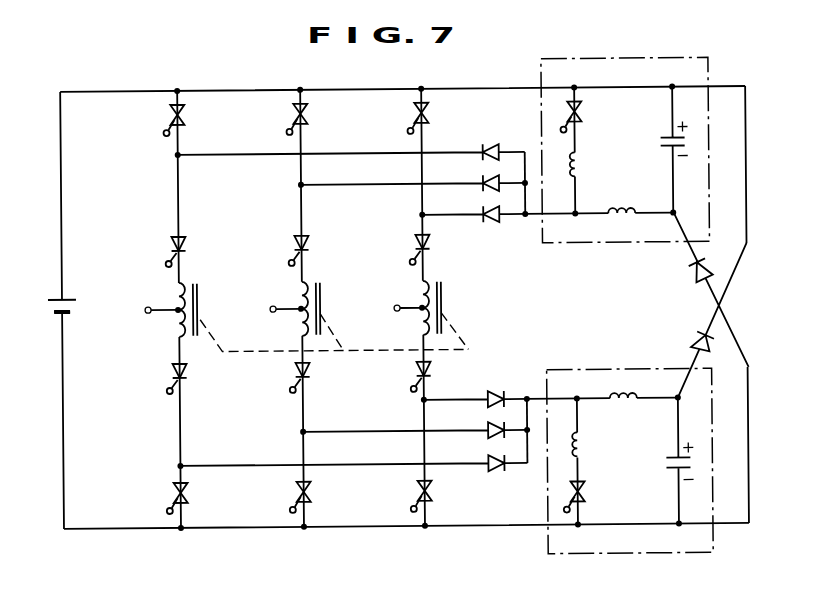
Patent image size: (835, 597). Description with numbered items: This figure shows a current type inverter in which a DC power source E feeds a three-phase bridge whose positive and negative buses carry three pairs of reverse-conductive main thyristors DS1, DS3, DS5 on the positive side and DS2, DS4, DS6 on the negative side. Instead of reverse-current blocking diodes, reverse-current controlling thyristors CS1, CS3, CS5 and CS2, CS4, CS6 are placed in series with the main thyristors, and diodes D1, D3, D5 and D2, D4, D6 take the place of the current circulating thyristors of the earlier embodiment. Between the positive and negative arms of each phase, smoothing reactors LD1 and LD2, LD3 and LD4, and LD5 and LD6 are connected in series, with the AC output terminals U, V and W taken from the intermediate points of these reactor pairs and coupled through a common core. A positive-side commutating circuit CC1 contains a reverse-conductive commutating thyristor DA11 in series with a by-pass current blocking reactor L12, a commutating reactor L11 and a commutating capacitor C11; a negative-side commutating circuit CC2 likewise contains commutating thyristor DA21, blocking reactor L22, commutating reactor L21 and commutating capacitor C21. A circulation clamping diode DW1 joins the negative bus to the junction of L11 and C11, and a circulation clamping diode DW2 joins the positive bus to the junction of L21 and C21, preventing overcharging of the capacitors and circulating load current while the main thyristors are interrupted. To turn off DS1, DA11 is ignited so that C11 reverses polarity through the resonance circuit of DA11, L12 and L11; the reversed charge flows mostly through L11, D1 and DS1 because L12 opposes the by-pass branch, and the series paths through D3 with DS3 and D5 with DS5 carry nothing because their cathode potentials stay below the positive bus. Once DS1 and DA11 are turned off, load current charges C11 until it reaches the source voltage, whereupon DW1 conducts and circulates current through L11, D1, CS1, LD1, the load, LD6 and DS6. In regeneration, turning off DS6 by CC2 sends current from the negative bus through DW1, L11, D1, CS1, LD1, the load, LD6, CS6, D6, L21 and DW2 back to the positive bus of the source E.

The DC power source E is at (94, 290).
The main thyristor DS1 is at (171, 111).
The main thyristor DS2 is at (171, 489).
The main thyristor DS3 is at (294, 111).
The main thyristor DS4 is at (294, 491).
The main thyristor DS5 is at (414, 111).
The main thyristor DS6 is at (416, 491).
The thyristor CS1 is at (188, 241).
The thyristor CS2 is at (172, 370).
The thyristor CS3 is at (311, 244).
The thyristor CS4 is at (292, 370).
The thyristor CS5 is at (432, 243).
The thyristor CS6 is at (412, 370).
The smoothing reactor LD1 is at (173, 290).
The smoothing reactor LD2 is at (175, 323).
The smoothing reactor LD3 is at (298, 292).
The smoothing reactor LD4 is at (297, 324).
The smoothing reactor LD5 is at (420, 293).
The smoothing reactor LD6 is at (418, 324).
The AC output terminal U is at (153, 310).
The AC output terminal V is at (276, 309).
The AC output terminal W is at (398, 309).
The diode D1 is at (490, 143).
The diode D2 is at (492, 458).
The diode D3 is at (493, 176).
The diode D4 is at (492, 426).
The diode D5 is at (493, 208).
The diode D6 is at (492, 393).
The commutating circuit CC1 is at (682, 60).
The commutating circuit CC2 is at (601, 40).
The commutating thyristor DA11 is at (586, 111).
The commutating thyristor DA21 is at (589, 495).
The commutating capacitor C11 is at (663, 143).
The commutating capacitor C21 is at (666, 462).
The commutating reactor L11 is at (609, 212).
The by-pass current blocking reactor L12 is at (587, 167).
The commutating reactor L21 is at (614, 407).
The by-pass current blocking reactor L22 is at (587, 445).
The circulation clamping diode DW1 is at (692, 278).
The circulation clamping diode DW2 is at (695, 340).